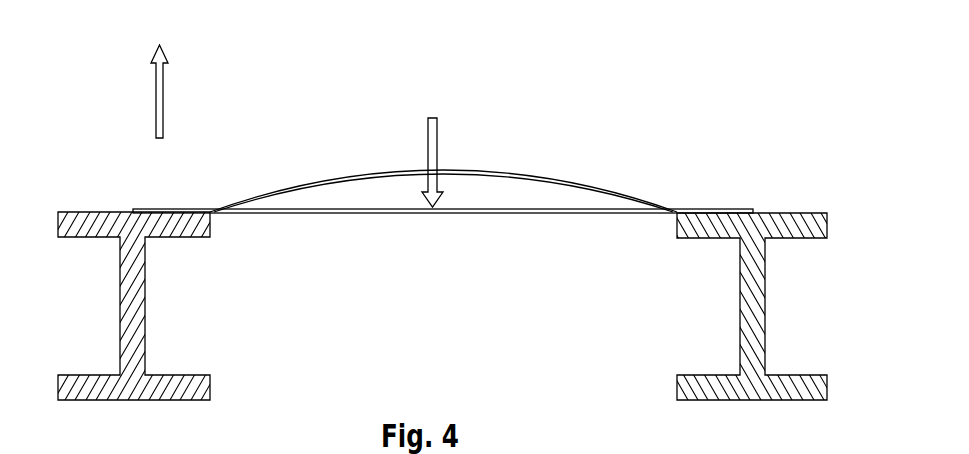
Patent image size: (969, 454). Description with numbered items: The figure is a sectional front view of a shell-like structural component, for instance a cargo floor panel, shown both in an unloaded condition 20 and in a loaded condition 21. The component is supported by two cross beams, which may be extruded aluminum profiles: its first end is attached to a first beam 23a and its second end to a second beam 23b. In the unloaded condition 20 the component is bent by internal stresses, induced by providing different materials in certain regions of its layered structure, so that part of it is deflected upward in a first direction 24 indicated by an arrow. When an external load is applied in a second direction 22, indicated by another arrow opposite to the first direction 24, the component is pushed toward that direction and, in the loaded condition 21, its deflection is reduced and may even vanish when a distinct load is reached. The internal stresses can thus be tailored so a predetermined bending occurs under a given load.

The unloaded condition 20 is at (503, 166).
The loaded condition 21 is at (329, 200).
The second direction 22 is at (428, 138).
The first beam 23a is at (105, 212).
The second beam 23b is at (773, 212).
The first direction 24 is at (163, 98).